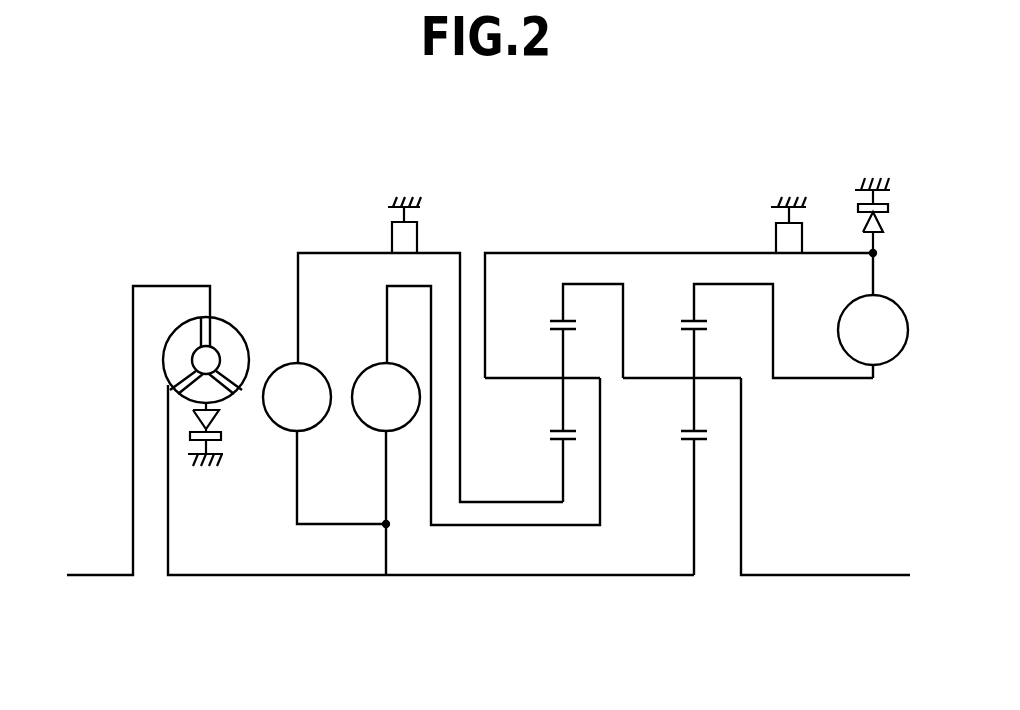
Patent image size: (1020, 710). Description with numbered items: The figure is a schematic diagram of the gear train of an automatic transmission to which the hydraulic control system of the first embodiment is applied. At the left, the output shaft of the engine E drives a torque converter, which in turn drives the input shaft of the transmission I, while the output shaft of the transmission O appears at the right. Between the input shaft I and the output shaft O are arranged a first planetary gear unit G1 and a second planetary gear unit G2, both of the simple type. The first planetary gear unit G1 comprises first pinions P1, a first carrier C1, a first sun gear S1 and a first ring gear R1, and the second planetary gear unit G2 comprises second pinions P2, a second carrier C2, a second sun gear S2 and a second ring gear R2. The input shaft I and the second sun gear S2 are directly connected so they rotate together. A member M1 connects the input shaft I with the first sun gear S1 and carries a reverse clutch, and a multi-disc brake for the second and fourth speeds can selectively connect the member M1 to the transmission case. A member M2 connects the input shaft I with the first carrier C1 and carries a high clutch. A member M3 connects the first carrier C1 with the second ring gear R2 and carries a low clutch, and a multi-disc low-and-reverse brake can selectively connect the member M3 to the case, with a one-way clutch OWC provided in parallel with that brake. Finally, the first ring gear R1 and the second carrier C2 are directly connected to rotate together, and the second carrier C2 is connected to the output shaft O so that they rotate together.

The output shaft of an engine E is at (107, 575).
The input shaft of the transmission I is at (271, 575).
The output shaft of the transmission O is at (829, 575).
The member M1 is at (323, 253).
The member M2 is at (432, 303).
The member M3 is at (572, 253).
The first planetary gear unit G1 is at (549, 342).
The second planetary gear unit G2 is at (737, 379).
The first ring gear R1 is at (563, 312).
The first carrier C1 is at (517, 378).
The first pinions P1 is at (563, 412).
The first sun gear S1 is at (563, 480).
The second ring gear R2 is at (694, 312).
The second carrier C2 is at (653, 378).
The second pinions P2 is at (694, 412).
The second sun gear S2 is at (694, 480).
The one-way clutch OWC is at (860, 230).